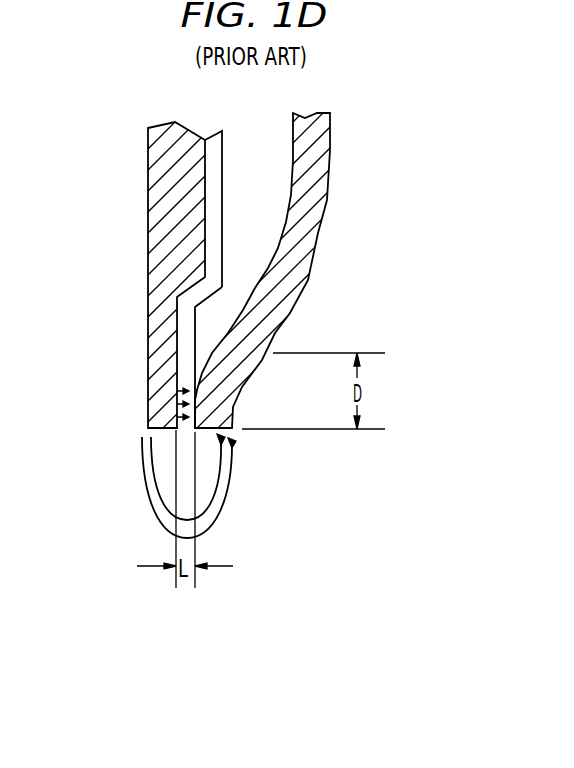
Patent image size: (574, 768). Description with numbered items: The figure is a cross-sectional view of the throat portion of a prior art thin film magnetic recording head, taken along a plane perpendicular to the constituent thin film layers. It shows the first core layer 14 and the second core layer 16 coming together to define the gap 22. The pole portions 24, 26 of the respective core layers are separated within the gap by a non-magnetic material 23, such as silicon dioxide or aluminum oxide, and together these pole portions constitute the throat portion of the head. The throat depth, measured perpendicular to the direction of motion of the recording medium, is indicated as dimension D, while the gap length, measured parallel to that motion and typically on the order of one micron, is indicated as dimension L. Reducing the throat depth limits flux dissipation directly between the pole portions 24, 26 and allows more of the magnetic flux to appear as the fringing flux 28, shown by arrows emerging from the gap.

The first core layer 14 is at (157, 203).
The second core layer 16 is at (320, 163).
The gap 22 is at (183, 430).
The non-magnetic material 23 is at (180, 339).
The pole portion 24 is at (150, 403).
The pole portion 26 is at (223, 405).
The fringing flux 28 is at (207, 523).